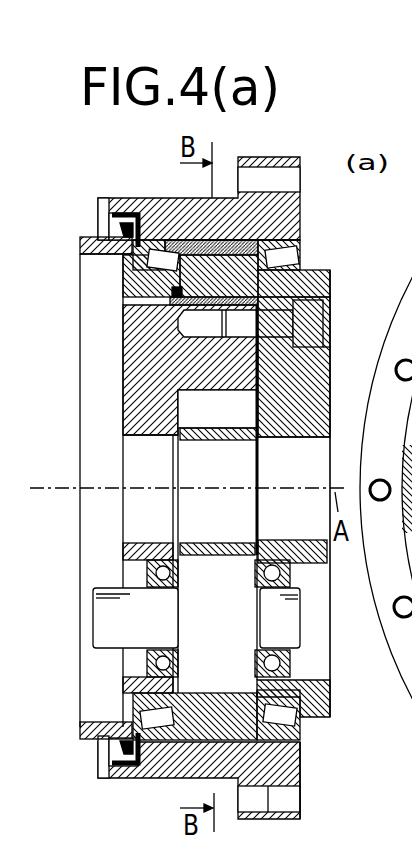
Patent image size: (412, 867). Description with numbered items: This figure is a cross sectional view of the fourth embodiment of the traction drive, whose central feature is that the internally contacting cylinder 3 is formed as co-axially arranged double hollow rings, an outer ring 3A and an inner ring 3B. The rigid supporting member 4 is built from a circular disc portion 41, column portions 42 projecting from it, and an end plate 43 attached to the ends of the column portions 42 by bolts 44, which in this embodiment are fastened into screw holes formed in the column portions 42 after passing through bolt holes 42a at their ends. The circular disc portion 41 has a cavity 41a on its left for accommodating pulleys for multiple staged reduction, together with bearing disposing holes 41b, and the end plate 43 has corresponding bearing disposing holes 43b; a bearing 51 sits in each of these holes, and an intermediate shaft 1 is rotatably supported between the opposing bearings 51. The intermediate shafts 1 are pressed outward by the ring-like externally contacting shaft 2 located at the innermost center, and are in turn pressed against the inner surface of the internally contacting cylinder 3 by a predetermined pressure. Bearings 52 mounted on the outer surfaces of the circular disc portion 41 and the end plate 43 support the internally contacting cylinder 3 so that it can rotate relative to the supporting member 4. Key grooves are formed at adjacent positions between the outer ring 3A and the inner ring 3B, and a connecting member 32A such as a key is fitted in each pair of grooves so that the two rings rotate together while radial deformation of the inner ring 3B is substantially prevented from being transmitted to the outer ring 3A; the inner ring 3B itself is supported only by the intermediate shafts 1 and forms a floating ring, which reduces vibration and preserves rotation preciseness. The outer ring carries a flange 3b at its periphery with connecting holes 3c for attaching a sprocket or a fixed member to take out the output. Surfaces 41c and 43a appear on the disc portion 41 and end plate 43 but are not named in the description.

The intermediate shaft 1 is at (268, 618).
The externally contacting shaft 2 is at (222, 560).
The internally contacting cylinder 3 is at (192, 778).
The outer ring 3A is at (232, 212).
The inner ring 3B is at (195, 240).
The flange 3b is at (293, 765).
The connecting hole 3c is at (290, 802).
The supporting member 4 is at (80, 320).
The circular disc portion 41 is at (95, 236).
The cavity 41a is at (110, 253).
The bearing disposing hole 41b is at (133, 567).
The bore surface 41c is at (142, 438).
The column portion 42 is at (225, 385).
The bolt hole 42a is at (320, 363).
The end plate 43 is at (333, 277).
The step portion 43a is at (313, 350).
The bearing disposing hole 43b is at (303, 567).
The bolt 44 is at (310, 320).
The bearing 51 is at (148, 664).
The bearing 52 is at (149, 205).
The connecting member 32A is at (265, 222).